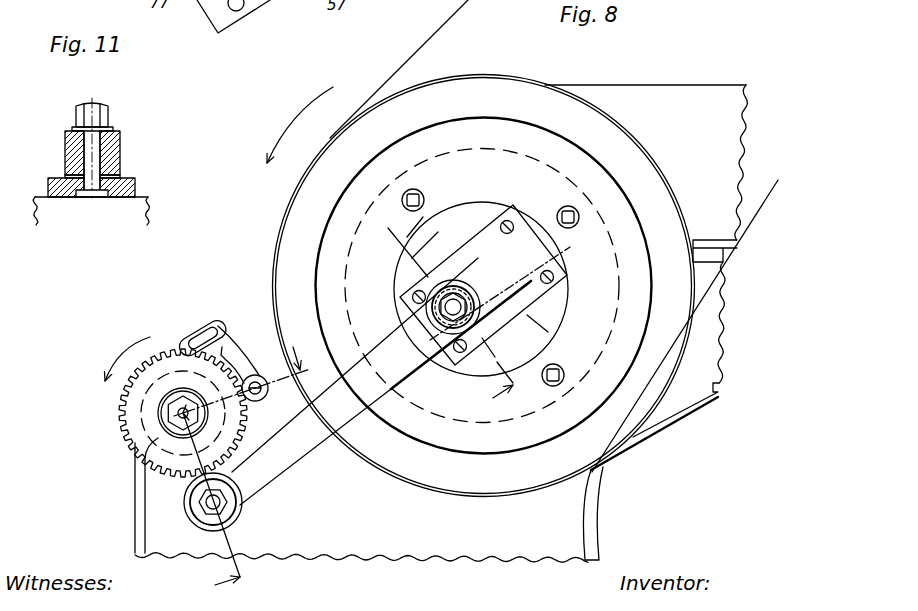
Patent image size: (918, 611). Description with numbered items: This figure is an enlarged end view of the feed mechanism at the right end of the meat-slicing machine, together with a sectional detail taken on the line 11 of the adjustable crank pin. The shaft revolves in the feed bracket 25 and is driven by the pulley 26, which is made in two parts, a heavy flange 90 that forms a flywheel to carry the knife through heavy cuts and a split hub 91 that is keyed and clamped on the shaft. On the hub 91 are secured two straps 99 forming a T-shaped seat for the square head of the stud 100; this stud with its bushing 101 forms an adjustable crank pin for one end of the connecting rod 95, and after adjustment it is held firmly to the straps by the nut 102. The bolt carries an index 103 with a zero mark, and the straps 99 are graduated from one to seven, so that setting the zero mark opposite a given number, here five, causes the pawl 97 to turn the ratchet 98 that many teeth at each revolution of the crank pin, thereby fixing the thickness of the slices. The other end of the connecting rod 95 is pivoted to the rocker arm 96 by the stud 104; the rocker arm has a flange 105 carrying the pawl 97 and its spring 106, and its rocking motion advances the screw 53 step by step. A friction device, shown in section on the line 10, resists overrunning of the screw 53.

In FIG. 8, the section line 10 is at (256, 474).
In FIG. 8, the section line 11 is at (453, 307).
In FIG. 8, the feed bracket 25 is at (596, 523).
In FIG. 8, the pulley 26 is at (500, 72).
In FIG. 8, the screw 53 is at (183, 413).
In FIG. 8, the flange 90 is at (628, 148).
In FIG. 8, the hub 91 is at (460, 227).
In FIG. 8, the connecting rod 95 is at (305, 443).
In FIG. 8, the rocker arm 96 is at (163, 423).
In FIG. 8, the pawl 97 is at (229, 355).
In FIG. 8, the ratchet 98 is at (125, 397).
In FIG. 8, the straps 99 is at (548, 263).
In FIG. 11, the straps 99 is at (50, 181).
In FIG. 8, the stud 100 is at (446, 307).
In FIG. 11, the stud 100 is at (90, 199).
In FIG. 11, the bushing 101 is at (118, 134).
In FIG. 11, the nut 102 is at (108, 110).
In FIG. 8, the index 103 is at (497, 290).
In FIG. 11, the index 103 is at (120, 177).
In FIG. 8, the stud 104 is at (222, 507).
In FIG. 8, the flange 105 is at (192, 340).
In FIG. 8, the spring 106 is at (218, 333).